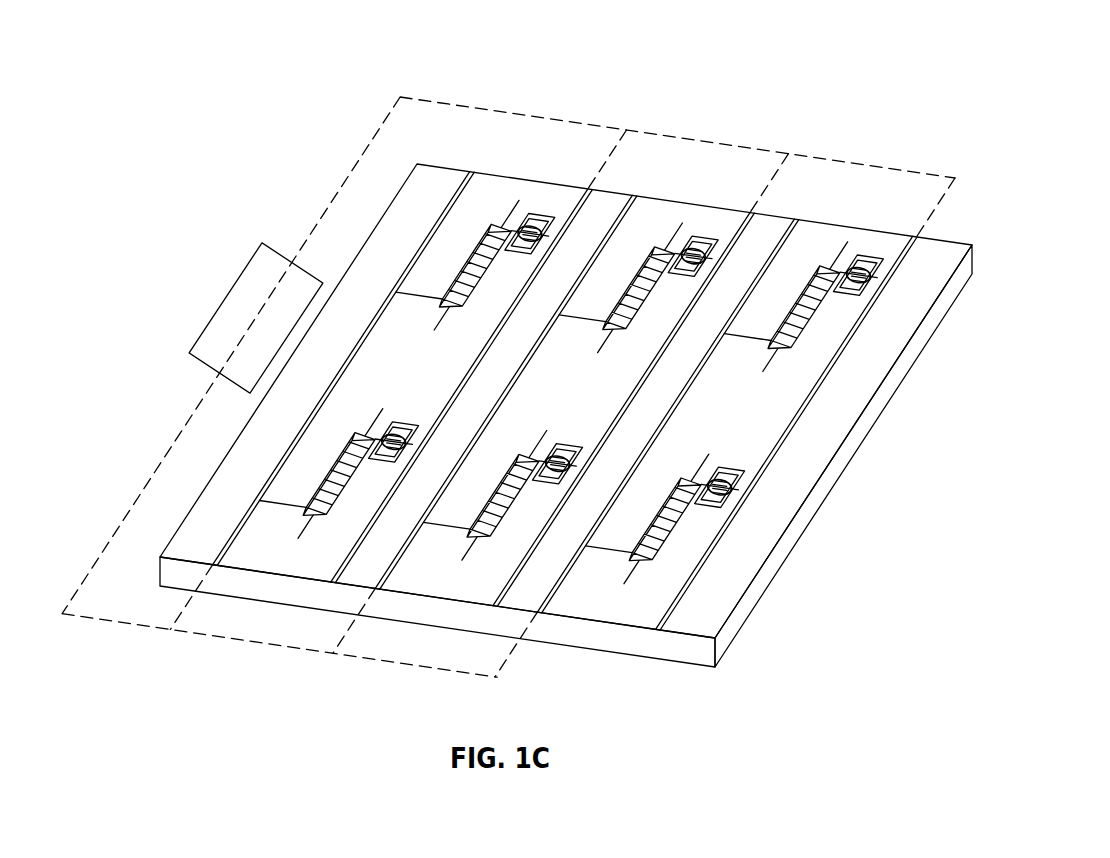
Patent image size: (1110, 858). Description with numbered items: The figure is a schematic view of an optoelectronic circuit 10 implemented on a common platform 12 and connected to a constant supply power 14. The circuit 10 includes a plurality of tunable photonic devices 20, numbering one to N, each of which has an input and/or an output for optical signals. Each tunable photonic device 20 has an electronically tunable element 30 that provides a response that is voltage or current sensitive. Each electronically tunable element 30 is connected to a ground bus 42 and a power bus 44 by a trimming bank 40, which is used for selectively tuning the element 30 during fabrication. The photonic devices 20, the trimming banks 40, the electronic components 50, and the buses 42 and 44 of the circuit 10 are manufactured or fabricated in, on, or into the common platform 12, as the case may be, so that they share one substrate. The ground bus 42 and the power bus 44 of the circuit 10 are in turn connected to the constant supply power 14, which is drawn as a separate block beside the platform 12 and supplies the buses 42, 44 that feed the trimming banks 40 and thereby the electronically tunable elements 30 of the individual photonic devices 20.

The optoelectronic circuit 10 is at (257, 46).
The common platform 12 is at (737, 551).
The constant supply power 14 is at (226, 299).
The tunable photonic device 20 is at (449, 323).
The electronically tunable element 30 is at (643, 258).
The trimming bank 40 is at (511, 255).
The ground bus 42 is at (570, 212).
The power bus 44 is at (452, 198).
The electronic component 50 is at (705, 240).